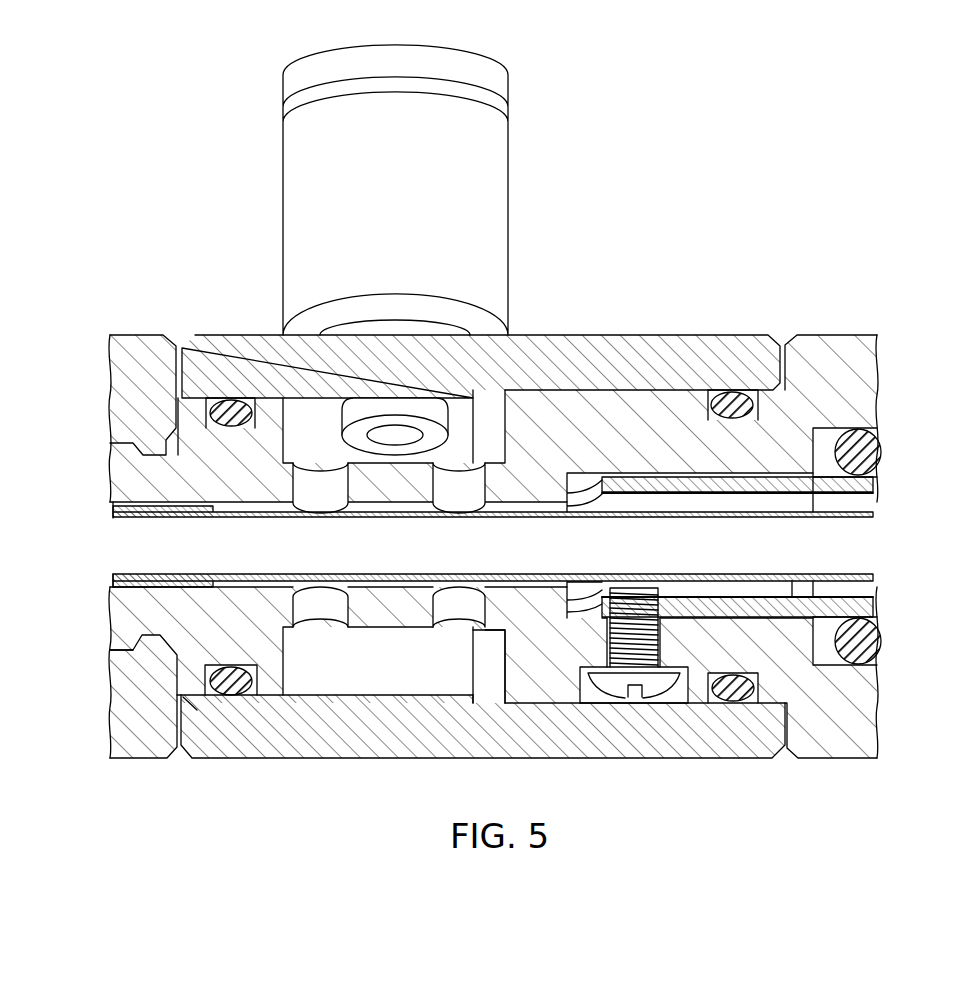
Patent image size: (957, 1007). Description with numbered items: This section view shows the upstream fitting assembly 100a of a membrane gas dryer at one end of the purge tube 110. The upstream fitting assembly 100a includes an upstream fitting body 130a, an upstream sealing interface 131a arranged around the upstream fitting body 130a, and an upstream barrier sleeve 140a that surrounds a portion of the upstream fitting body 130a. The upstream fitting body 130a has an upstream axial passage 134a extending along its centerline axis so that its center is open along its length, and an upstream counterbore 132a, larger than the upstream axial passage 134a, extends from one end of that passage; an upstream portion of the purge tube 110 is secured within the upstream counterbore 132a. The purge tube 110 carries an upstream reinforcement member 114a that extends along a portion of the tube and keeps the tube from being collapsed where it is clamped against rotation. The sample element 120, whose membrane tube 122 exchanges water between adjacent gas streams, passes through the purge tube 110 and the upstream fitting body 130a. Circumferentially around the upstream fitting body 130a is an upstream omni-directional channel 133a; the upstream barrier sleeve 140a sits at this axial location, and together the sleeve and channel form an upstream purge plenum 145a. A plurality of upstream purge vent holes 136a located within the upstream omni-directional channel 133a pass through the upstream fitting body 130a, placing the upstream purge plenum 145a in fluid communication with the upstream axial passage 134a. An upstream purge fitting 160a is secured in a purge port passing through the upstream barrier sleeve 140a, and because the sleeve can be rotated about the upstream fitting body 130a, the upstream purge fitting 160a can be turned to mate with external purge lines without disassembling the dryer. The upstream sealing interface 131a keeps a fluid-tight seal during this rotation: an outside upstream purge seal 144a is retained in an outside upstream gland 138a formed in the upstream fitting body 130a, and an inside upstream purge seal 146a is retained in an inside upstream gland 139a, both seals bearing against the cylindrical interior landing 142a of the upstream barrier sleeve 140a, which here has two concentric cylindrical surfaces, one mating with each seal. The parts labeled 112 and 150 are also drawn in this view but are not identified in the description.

The upstream fitting assembly 100a is at (728, 206).
The purge tube 110 is at (858, 500).
The second conductor strip 112 is at (868, 606).
The upstream reinforcement member 114a is at (787, 580).
The sample element 120 is at (840, 522).
The membrane tube 122 is at (735, 573).
The upstream fitting body 130a is at (843, 326).
The upstream sealing interface 131a is at (248, 700).
The upstream counterbore 132a is at (650, 685).
The upstream omni-directional channel 133a is at (358, 632).
The upstream axial passage 134a is at (401, 598).
The upstream purge vent holes 136a is at (313, 472).
The outside upstream gland 138a is at (210, 697).
The inside upstream gland 139a is at (755, 700).
The upstream barrier sleeve 140a is at (208, 330).
The cylindrical interior landing 142a is at (410, 685).
The outside upstream purge seal 144a is at (245, 679).
The upstream purge plenum 145a is at (467, 683).
The inside upstream purge seal 146a is at (730, 688).
The lower housing 150 is at (133, 767).
The upstream purge fitting 160a is at (283, 183).